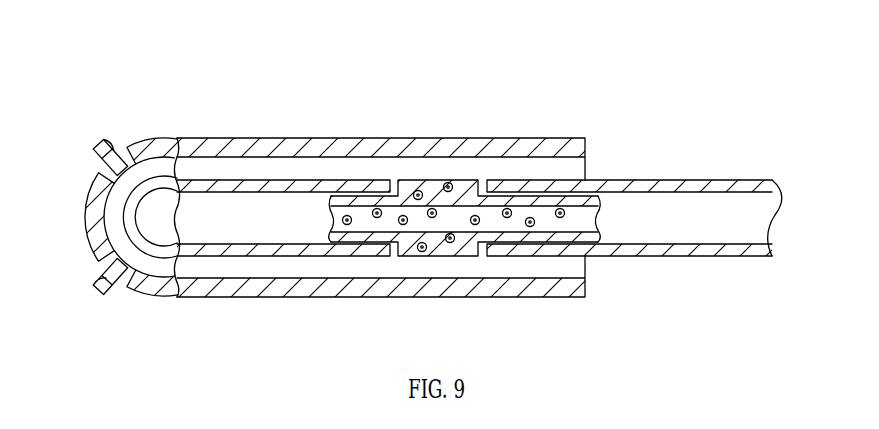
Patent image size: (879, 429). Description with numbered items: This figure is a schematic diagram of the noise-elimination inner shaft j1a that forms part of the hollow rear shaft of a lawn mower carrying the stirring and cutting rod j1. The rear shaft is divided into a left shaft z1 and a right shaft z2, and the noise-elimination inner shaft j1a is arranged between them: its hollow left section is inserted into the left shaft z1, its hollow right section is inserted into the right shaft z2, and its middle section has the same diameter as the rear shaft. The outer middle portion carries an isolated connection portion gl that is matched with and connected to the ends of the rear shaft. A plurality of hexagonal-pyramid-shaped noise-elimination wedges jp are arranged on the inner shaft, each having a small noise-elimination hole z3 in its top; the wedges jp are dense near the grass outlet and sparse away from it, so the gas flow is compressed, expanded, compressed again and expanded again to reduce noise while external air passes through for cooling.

The stirring and cutting rod j1 is at (238, 138).
The noise-elimination inner shaft j1a is at (476, 186).
The left shaft z1 is at (268, 188).
The right shaft z2 is at (738, 186).
The noise-elimination hole z3 is at (420, 249).
The noise-elimination wedges jp is at (415, 191).
The isolated connection portion gl is at (432, 208).